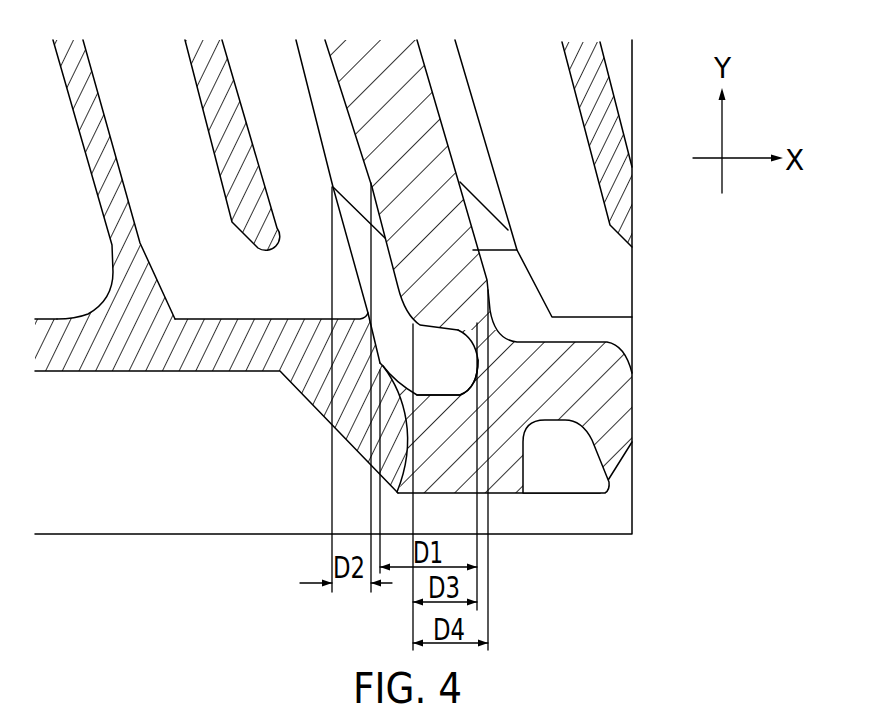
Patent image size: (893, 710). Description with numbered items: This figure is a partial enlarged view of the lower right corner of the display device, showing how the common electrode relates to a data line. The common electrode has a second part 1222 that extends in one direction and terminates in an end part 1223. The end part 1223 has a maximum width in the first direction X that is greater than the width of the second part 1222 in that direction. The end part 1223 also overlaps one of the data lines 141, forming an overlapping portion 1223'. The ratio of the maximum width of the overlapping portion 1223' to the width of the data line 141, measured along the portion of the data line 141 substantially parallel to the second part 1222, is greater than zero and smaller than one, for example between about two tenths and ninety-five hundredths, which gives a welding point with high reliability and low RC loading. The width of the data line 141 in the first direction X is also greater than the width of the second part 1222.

The data line 141 is at (368, 114).
The second part 1222 is at (330, 81).
The end part 1223 is at (547, 362).
The overlapping portion 1223' is at (567, 399).